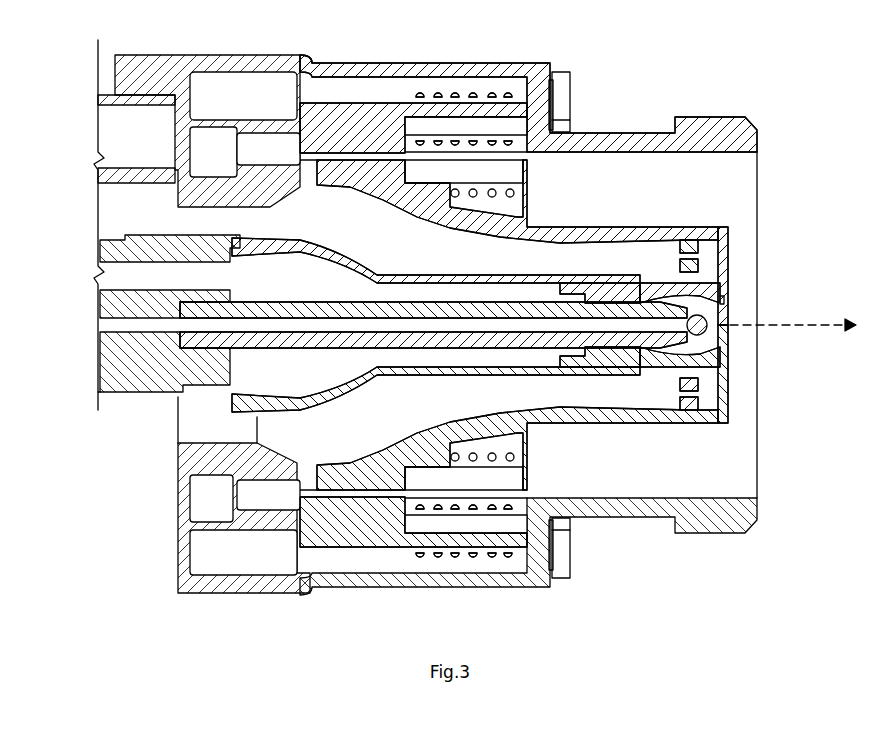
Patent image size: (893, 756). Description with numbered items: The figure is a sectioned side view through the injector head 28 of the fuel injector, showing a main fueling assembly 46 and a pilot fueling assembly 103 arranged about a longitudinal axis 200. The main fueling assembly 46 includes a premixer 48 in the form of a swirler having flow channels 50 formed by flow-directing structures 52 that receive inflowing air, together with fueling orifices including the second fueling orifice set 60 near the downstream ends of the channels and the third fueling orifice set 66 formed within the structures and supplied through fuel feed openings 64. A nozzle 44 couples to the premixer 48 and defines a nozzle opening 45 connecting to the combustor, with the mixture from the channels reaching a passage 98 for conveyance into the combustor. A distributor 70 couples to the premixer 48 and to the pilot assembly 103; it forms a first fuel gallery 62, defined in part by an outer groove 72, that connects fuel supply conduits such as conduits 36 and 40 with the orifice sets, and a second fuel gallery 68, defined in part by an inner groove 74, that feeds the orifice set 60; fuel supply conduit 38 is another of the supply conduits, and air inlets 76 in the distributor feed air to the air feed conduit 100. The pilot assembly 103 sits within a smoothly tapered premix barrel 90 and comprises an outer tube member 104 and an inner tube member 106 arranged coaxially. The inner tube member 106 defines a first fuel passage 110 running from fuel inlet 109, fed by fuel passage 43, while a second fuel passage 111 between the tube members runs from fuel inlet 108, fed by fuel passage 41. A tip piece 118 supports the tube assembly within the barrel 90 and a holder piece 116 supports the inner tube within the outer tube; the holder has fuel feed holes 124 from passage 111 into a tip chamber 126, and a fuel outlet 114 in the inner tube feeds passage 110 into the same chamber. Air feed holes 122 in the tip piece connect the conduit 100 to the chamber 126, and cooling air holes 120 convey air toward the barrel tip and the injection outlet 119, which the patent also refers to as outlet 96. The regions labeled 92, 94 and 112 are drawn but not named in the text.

The injector head 28 is at (112, 634).
The fuel supply conduit 36 is at (100, 100).
The fuel supply conduit 38 is at (100, 378).
The fuel supply conduit 40 is at (100, 70).
The fuel passage 41 is at (107, 262).
The fuel passage 43 is at (100, 325).
The nozzle 44 is at (758, 520).
The nozzle opening 45 is at (758, 498).
The main fueling assembly 46 is at (452, 62).
The premixer 48 is at (355, 64).
The flow channels 50 is at (352, 70).
The flow-directing structures 52 is at (512, 68).
The second fueling orifice set 60 is at (330, 140).
The first fuel gallery 62 is at (225, 88).
The fuel feed openings 64 is at (305, 60).
The third fueling orifice set 66 is at (512, 88).
The second fuel gallery 68 is at (205, 190).
The distributor 70 is at (196, 592).
The outer groove 72 is at (192, 548).
The inner groove 74 is at (192, 498).
The air inlets 76 is at (120, 218).
The premix barrel 90 is at (578, 226).
The shroud base 92 is at (318, 188).
The upper shell 94 is at (730, 232).
The injection outlet 96 is at (730, 365).
The passage 98 is at (668, 170).
The air feed conduit 100 is at (556, 412).
The pilot fueling assembly 103 is at (462, 266).
The outer tube member 104 is at (360, 376).
The inner tube member 106 is at (244, 256).
The fuel inlet 108 is at (244, 394).
The fuel inlet 109 is at (182, 322).
The first fuel passage 110 is at (200, 302).
The second fuel passage 111 is at (308, 405).
The lower tip surface 112 is at (708, 333).
The fuel outlet 114 is at (708, 323).
The holder piece 116 is at (587, 286).
The tip piece 118 is at (690, 238).
The injection outlet 119 is at (726, 300).
The cooling air holes 120 is at (700, 394).
The air feed holes 122 is at (655, 358).
The fuel feed holes 124 is at (587, 364).
The tip chamber 126 is at (656, 290).
The longitudinal axis 200 is at (845, 325).